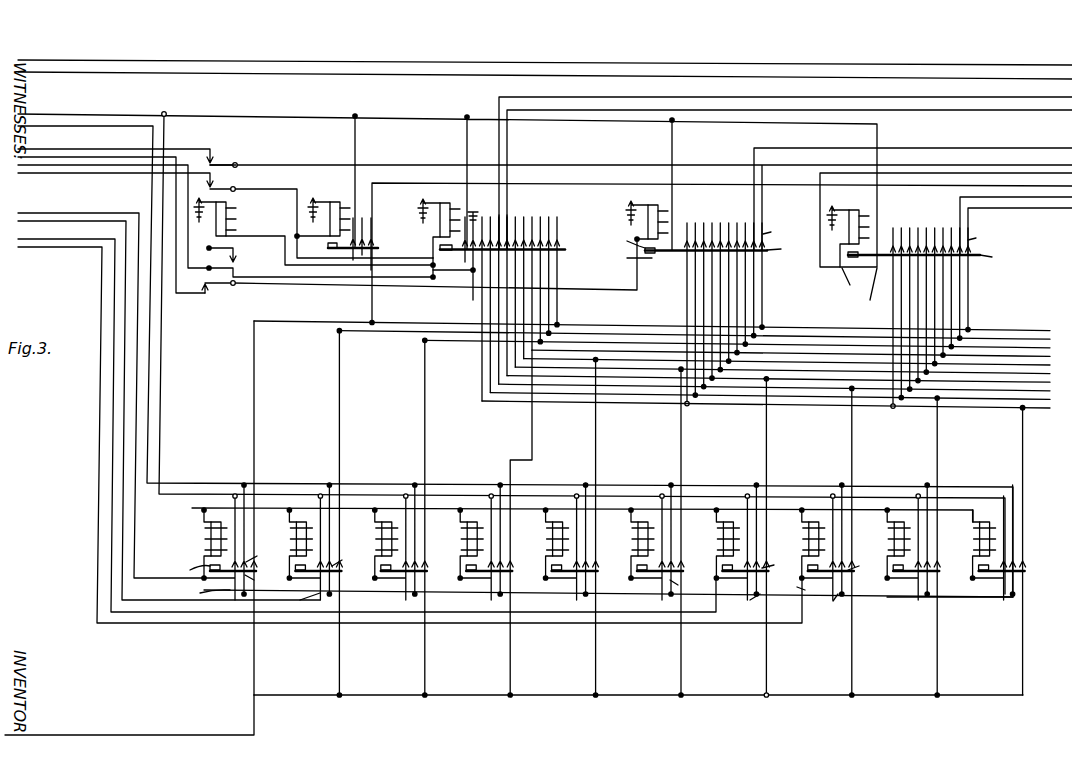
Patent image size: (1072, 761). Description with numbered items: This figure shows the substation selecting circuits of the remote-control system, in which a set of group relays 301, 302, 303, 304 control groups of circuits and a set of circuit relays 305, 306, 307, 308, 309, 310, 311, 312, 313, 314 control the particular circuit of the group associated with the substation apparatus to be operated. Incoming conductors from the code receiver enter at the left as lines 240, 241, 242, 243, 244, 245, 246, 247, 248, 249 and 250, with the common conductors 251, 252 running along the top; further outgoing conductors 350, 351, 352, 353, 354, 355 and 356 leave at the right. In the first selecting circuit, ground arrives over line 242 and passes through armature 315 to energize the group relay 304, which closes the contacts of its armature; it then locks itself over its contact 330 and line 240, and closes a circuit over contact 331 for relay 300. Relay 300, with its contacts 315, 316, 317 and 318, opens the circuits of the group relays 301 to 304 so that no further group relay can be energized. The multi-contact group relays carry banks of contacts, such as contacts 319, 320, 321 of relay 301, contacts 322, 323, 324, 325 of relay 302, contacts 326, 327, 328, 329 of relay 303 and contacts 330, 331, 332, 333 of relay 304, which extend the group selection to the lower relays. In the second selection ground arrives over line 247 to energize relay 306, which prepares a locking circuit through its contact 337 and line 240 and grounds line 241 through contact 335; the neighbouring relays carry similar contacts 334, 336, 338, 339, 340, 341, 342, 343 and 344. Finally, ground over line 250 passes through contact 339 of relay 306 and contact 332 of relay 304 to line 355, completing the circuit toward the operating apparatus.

The line 240 is at (60, 114).
The line 241 is at (74, 125).
The line 242 is at (115, 147).
The conductor 243 is at (72, 156).
The conductor 244 is at (114, 217).
The conductor 245 is at (66, 174).
The conductor 246 is at (54, 213).
The line 247 is at (78, 214).
The conductor 248 is at (56, 239).
The conductor 249 is at (40, 248).
The line 250 is at (45, 730).
The supply conductor 251 is at (78, 71).
The supply conductor 252 is at (60, 59).
The relay 300 is at (237, 210).
The group relay 301 is at (334, 203).
The group relay 302 is at (491, 293).
The group relay 303 is at (696, 296).
The group relay 304 is at (903, 298).
The circuit relay 305 is at (210, 553).
The circuit relay 306 is at (291, 538).
The circuit relay 307 is at (377, 538).
The circuit relay 308 is at (462, 538).
The circuit relay 309 is at (548, 538).
The circuit relay 310 is at (634, 538).
The circuit relay 311 is at (719, 538).
The circuit relay 312 is at (804, 538).
The circuit relay 313 is at (890, 538).
The circuit relay 314 is at (975, 538).
The armature 315 is at (222, 164).
The contact 316 is at (222, 187).
The contact 317 is at (238, 258).
The contact 318 is at (212, 291).
The relay contact 319 is at (357, 255).
The relay contact 320 is at (366, 247).
The relay contact 321 is at (376, 224).
The conductor 322 is at (463, 262).
The conductor 323 is at (473, 290).
The relay contact 324 is at (503, 233).
The relay contact 325 is at (511, 236).
The relay contact 326 is at (621, 241).
The relay contact 327 is at (625, 259).
The relay contact 328 is at (783, 231).
The contact bar 329 is at (790, 246).
The contact 330 is at (852, 283).
The contact 331 is at (862, 291).
The contact 332 is at (988, 236).
The contact bar 333 is at (1002, 256).
The relay contact 334 is at (184, 569).
The contact 335 is at (199, 592).
The relay contact 336 is at (267, 554).
The contact 337 is at (265, 579).
The relay contact 338 is at (308, 603).
The contact 339 is at (353, 557).
The relay contact 340 is at (719, 596).
The relay contact 341 is at (784, 564).
The relay contact 342 is at (787, 584).
The relay contact 343 is at (832, 606).
The relay contact 344 is at (869, 564).
The conductor 350 is at (1060, 100).
The conductor 351 is at (1050, 112).
The conductor 352 is at (1040, 148).
The conductor 353 is at (1013, 166).
The conductor 354 is at (1068, 191).
The line 355 is at (1010, 198).
The conductor 356 is at (1040, 209).